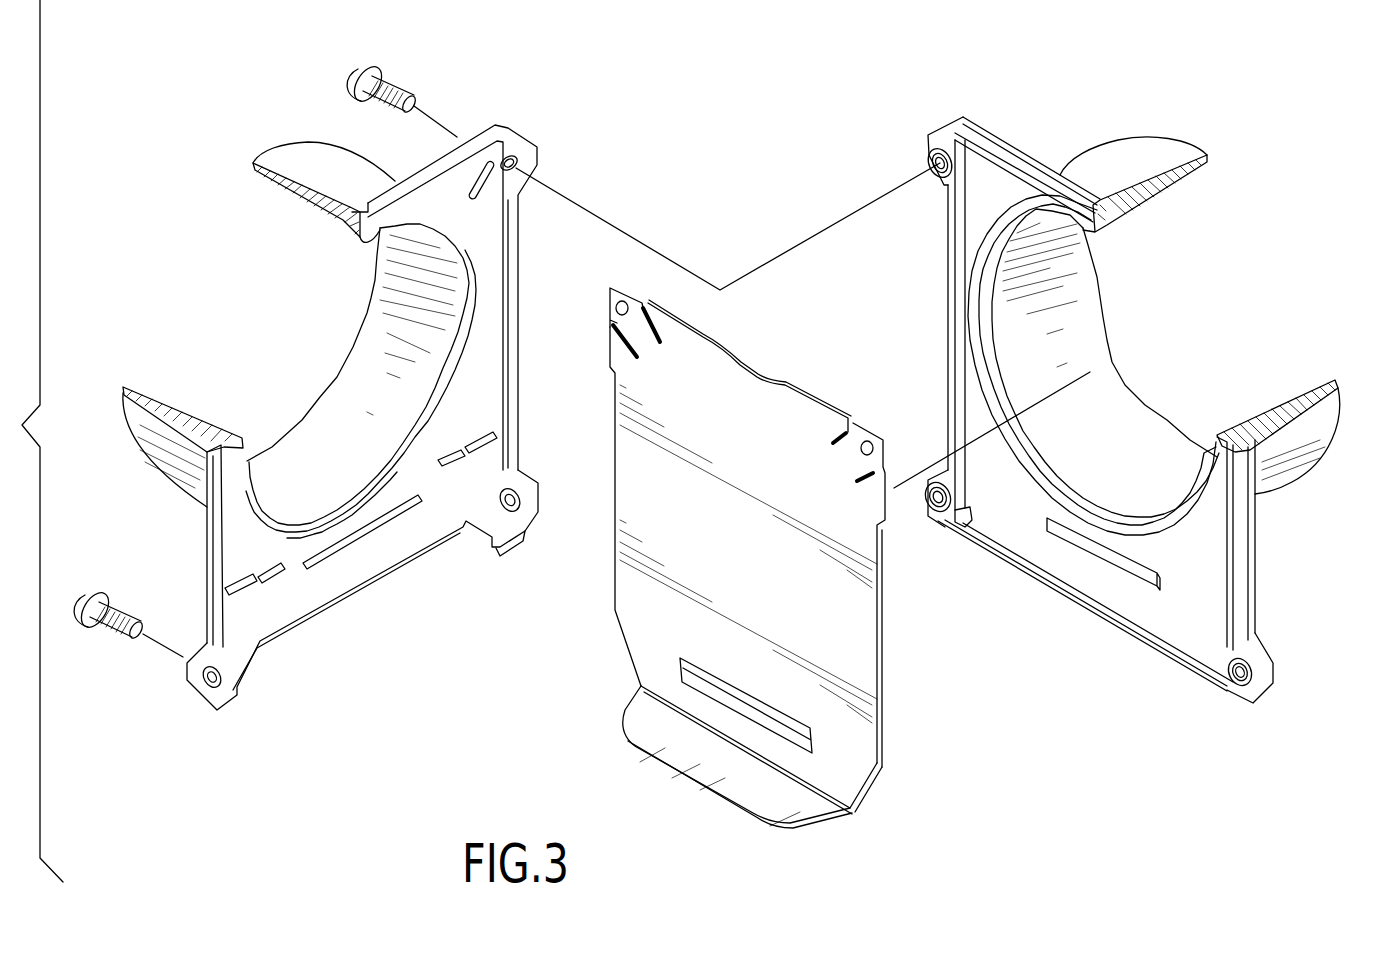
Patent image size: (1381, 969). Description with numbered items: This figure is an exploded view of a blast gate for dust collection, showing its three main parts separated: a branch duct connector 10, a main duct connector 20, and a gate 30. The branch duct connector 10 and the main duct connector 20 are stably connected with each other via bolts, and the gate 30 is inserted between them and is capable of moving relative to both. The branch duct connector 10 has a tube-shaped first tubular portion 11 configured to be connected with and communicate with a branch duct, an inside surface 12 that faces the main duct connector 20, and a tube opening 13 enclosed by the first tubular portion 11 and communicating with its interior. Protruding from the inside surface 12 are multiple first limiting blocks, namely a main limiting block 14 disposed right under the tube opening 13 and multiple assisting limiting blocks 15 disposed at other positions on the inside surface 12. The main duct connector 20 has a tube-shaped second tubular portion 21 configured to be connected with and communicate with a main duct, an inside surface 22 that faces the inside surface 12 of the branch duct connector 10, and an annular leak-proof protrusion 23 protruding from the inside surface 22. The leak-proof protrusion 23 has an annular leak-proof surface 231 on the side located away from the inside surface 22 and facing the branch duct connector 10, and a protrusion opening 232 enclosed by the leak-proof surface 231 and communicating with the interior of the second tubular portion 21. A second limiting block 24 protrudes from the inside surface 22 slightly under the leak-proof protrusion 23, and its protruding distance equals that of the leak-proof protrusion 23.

The branch duct connector 10 is at (301, 376).
The first tubular portion 11 is at (143, 453).
The inside surface 12 is at (245, 527).
The tube opening 13 is at (358, 243).
The main limiting block 14 is at (372, 530).
The assisting limiting blocks 15 is at (270, 573).
The main duct connector 20 is at (1131, 370).
The second tubular portion 21 is at (1290, 468).
The inside surface 22 is at (1200, 562).
The leak-proof protrusion 23 is at (983, 222).
The leak-proof surface 231 is at (1057, 483).
The protrusion opening 232 is at (1103, 233).
The second limiting block 24 is at (1098, 555).
The gate 30 is at (597, 648).